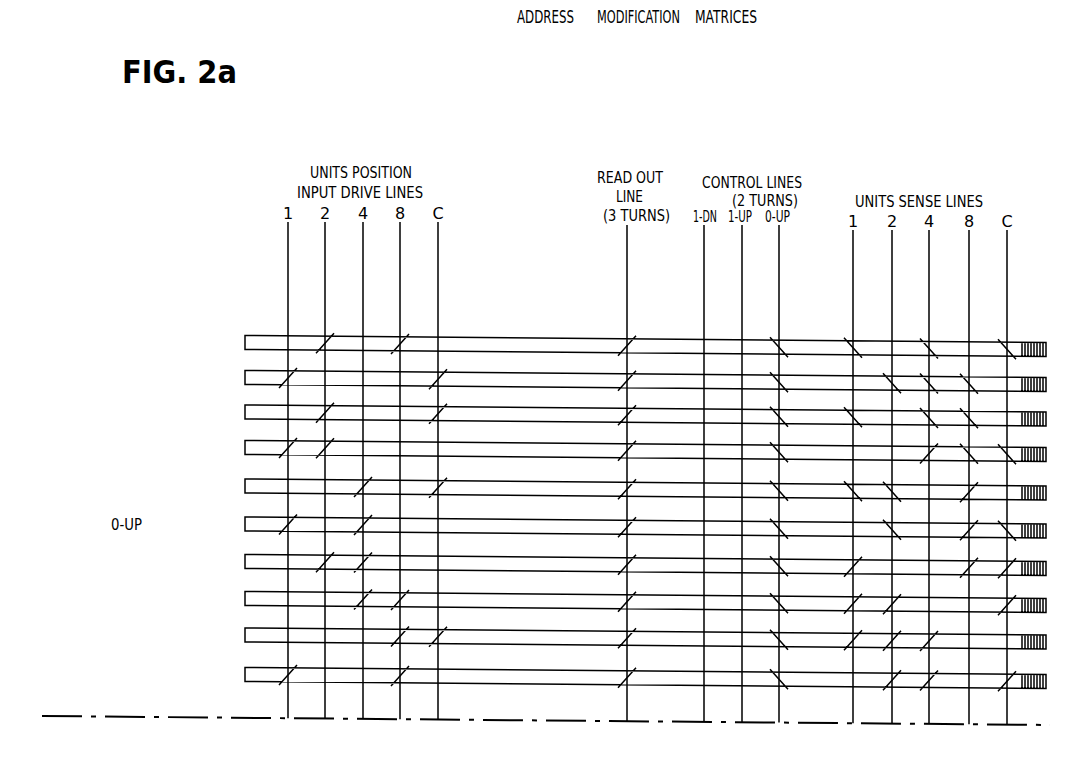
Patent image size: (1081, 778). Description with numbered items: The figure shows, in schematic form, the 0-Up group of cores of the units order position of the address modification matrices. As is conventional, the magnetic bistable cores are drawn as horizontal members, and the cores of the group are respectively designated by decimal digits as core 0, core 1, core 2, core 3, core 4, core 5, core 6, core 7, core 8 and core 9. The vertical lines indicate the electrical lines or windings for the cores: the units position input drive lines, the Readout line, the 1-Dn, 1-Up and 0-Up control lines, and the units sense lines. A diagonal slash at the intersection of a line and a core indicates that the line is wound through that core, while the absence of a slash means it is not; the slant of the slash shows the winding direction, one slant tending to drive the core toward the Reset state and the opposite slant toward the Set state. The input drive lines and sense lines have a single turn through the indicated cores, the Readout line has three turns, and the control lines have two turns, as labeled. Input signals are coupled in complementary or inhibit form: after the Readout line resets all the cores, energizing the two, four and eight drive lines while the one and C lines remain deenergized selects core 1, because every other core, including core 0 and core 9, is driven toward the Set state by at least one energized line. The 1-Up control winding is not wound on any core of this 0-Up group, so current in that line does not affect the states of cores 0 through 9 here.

The core number 0 is at (639, 346).
The core number 1 is at (639, 381).
The core number 2 is at (639, 416).
The core number 3 is at (639, 451).
The core number 4 is at (639, 489).
The core number 5 is at (639, 527).
The core number 6 is at (639, 565).
The core number 7 is at (639, 603).
The core number 8 is at (639, 638).
The core number 9 is at (639, 678).